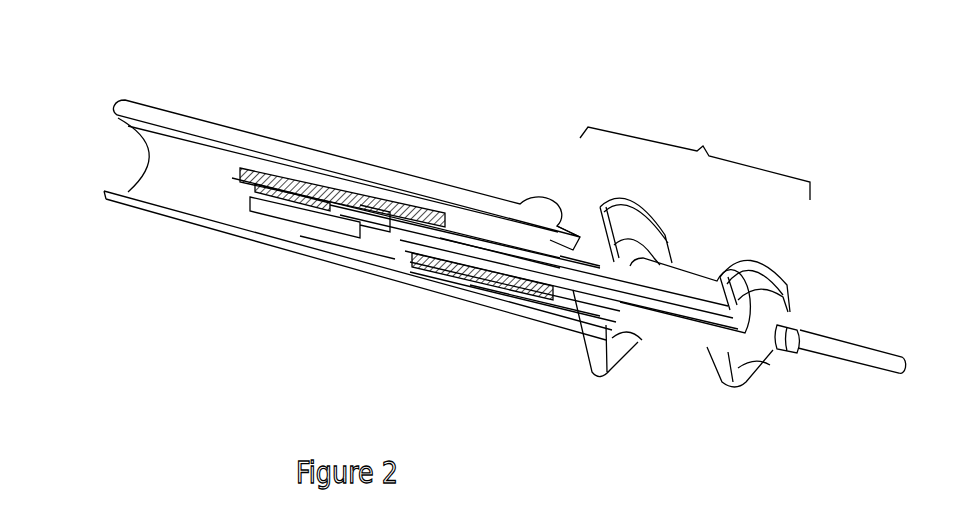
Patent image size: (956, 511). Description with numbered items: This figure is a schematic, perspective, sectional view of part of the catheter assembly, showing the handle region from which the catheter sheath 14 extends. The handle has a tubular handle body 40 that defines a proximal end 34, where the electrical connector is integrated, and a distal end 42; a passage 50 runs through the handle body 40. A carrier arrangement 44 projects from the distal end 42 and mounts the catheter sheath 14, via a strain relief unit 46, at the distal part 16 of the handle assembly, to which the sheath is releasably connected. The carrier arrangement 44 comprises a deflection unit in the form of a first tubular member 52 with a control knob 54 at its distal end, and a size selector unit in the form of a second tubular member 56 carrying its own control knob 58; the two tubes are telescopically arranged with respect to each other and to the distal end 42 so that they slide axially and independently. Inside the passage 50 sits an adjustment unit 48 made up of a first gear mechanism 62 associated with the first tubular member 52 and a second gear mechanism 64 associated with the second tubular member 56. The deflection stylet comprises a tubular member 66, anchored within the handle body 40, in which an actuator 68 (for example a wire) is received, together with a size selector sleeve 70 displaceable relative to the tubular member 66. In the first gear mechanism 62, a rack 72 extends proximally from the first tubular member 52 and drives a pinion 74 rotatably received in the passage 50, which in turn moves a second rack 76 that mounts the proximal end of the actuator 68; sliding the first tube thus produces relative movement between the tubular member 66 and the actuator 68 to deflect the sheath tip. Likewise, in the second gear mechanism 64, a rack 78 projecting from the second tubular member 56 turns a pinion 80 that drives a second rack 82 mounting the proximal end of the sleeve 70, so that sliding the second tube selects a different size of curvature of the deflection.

The catheter sheath 14 is at (854, 342).
The distal part of the handle assembly 16 is at (679, 396).
The proximal end of the handle assembly 34 is at (133, 184).
The tubular handle body 40 is at (211, 121).
The distal end of the handle body 42 is at (513, 298).
The carrier arrangement 44 is at (704, 150).
The strain relief unit 46 is at (790, 314).
The adjustment unit 48 is at (422, 270).
The passage 50 is at (180, 187).
The first tubular member 52 is at (565, 229).
The control knob 54 is at (623, 198).
The second tubular member 56 is at (682, 268).
The control knob 58 is at (761, 258).
The first gear mechanism 62 is at (358, 168).
The second gear mechanism 64 is at (437, 274).
The tubular member 66 is at (445, 251).
The actuator 68 is at (423, 238).
The sleeve 70 is at (556, 273).
The rack 72 is at (412, 200).
The pinion 74 is at (320, 210).
The second rack 76 is at (258, 214).
The rack 78 is at (504, 288).
The pinion 80 is at (446, 250).
The second rack 82 is at (454, 246).